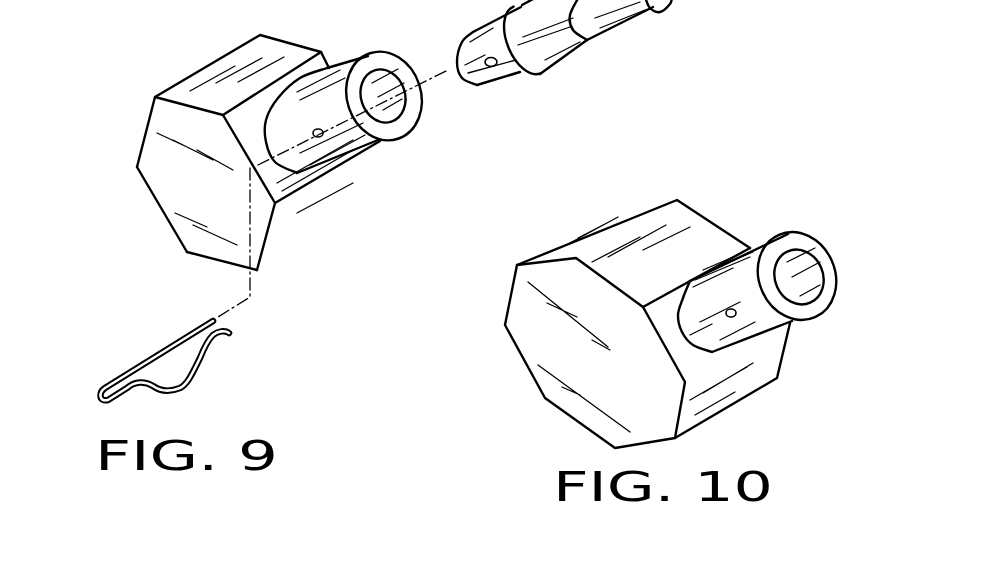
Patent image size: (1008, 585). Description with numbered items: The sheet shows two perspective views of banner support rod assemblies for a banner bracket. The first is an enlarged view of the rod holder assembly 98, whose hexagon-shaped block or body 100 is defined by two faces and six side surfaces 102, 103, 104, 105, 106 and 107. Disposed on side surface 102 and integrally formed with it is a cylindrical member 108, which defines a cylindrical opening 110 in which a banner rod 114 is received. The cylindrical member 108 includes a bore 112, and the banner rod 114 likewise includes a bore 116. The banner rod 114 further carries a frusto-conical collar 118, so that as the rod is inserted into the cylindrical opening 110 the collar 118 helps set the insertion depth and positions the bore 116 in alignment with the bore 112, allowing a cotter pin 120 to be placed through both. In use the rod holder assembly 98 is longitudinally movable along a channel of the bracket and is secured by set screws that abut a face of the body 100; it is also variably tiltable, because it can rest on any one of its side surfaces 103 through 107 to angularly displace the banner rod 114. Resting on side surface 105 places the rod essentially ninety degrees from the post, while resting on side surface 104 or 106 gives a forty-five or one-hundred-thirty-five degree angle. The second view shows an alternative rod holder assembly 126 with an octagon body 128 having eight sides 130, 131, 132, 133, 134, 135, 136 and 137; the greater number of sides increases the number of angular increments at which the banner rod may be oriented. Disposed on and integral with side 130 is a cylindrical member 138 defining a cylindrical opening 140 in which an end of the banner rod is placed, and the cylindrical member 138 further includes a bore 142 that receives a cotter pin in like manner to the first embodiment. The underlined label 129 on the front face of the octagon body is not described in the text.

In FIG. 9, the rod holder assembly 98 is at (132, 62).
In FIG. 9, the body 100 is at (137, 186).
In FIG. 9, the side surface 102 is at (333, 64).
In FIG. 9, the side surface 103 is at (242, 57).
In FIG. 9, the side surface 104 is at (148, 133).
In FIG. 9, the side surface 105 is at (167, 221).
In FIG. 9, the side surface 106 is at (212, 263).
In FIG. 9, the side surface 107 is at (338, 212).
In FIG. 9, the cylindrical member 108 is at (363, 152).
In FIG. 9, the cylindrical opening 110 is at (393, 78).
In FIG. 9, the bore 112 is at (317, 137).
In FIG. 9, the banner rod 114 is at (654, 12).
In FIG. 9, the bore 116 is at (486, 69).
In FIG. 9, the collar 118 is at (570, 53).
In FIG. 9, the cotter pin 120 is at (213, 354).
In FIG. 10, the rod holder assembly 126 is at (756, 176).
In FIG. 10, the octagon body 128 is at (497, 388).
In FIG. 10, the front face 129 is at (595, 353).
In FIG. 10, the side 130 is at (752, 256).
In FIG. 10, the side 131 is at (698, 234).
In FIG. 10, the side 132 is at (625, 217).
In FIG. 10, the side 133 is at (510, 303).
In FIG. 10, the side 134 is at (512, 346).
In FIG. 10, the side 135 is at (565, 413).
In FIG. 10, the side 136 is at (662, 442).
In FIG. 10, the side 137 is at (737, 390).
In FIG. 10, the cylindrical member 138 is at (787, 323).
In FIG. 10, the cylindrical opening 140 is at (807, 265).
In FIG. 10, the bore 142 is at (729, 318).